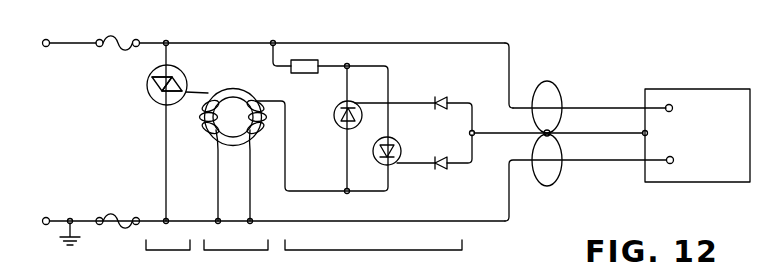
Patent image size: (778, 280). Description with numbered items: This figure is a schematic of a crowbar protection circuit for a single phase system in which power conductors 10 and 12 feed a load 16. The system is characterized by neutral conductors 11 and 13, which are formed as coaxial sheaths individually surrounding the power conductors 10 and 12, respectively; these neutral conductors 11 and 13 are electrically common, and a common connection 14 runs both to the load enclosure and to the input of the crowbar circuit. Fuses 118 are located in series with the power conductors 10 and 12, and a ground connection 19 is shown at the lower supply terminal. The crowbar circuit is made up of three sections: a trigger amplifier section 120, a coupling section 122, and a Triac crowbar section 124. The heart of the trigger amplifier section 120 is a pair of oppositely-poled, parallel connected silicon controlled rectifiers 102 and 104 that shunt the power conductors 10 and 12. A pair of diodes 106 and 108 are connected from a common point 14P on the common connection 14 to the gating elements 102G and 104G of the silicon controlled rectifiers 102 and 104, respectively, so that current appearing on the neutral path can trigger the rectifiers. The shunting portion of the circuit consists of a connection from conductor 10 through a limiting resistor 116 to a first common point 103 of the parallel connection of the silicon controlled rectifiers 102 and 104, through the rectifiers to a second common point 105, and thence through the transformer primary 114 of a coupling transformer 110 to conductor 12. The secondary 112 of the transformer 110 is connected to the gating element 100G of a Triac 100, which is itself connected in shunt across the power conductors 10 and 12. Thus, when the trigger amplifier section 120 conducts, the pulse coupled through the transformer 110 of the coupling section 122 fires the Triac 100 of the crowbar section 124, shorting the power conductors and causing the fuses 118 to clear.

The power conductor 10 is at (597, 107).
The neutral conductor 11 is at (556, 86).
The power conductor 12 is at (595, 160).
The neutral conductor 13 is at (560, 185).
The common connection 14 is at (598, 133).
The common point 14P is at (469, 133).
The load 16 is at (695, 89).
The ground connection 19 is at (62, 237).
The Triac 100 is at (148, 95).
The gating element 100G is at (179, 105).
The silicon controlled rectifier 102 is at (395, 139).
The gating element 102G is at (399, 166).
The first common point 103 is at (352, 64).
The silicon controlled rectifier 104 is at (338, 125).
The gating element 104G is at (355, 100).
The second common point 105 is at (344, 194).
The diode 106 is at (446, 169).
The diode 108 is at (446, 96).
The coupling transformer 110 is at (236, 88).
The secondary 112 is at (212, 131).
The transformer primary 114 is at (258, 131).
The limiting resistor 116 is at (301, 74).
The fuse 118 is at (116, 39).
The trigger amplifier section 120 is at (362, 252).
The coupling section 122 is at (230, 252).
The Triac crowbar section 124 is at (168, 252).